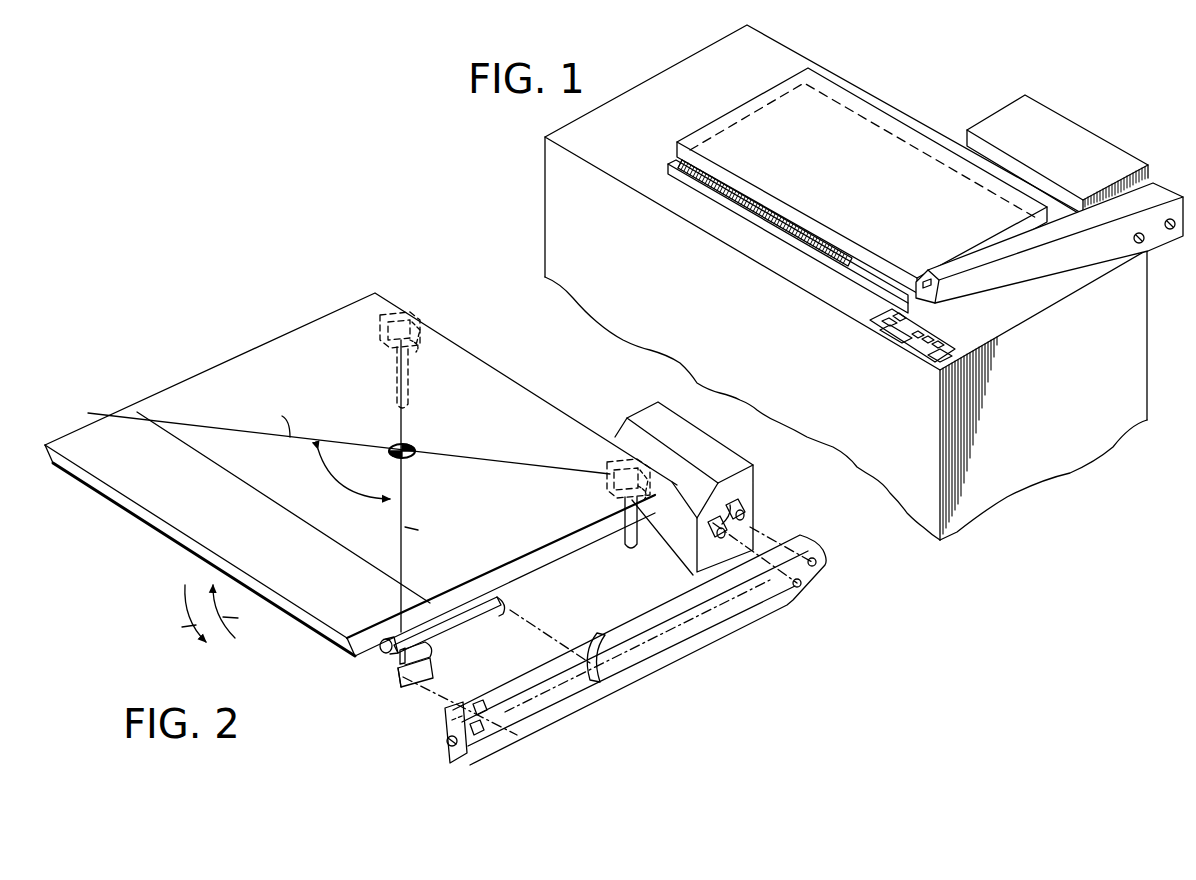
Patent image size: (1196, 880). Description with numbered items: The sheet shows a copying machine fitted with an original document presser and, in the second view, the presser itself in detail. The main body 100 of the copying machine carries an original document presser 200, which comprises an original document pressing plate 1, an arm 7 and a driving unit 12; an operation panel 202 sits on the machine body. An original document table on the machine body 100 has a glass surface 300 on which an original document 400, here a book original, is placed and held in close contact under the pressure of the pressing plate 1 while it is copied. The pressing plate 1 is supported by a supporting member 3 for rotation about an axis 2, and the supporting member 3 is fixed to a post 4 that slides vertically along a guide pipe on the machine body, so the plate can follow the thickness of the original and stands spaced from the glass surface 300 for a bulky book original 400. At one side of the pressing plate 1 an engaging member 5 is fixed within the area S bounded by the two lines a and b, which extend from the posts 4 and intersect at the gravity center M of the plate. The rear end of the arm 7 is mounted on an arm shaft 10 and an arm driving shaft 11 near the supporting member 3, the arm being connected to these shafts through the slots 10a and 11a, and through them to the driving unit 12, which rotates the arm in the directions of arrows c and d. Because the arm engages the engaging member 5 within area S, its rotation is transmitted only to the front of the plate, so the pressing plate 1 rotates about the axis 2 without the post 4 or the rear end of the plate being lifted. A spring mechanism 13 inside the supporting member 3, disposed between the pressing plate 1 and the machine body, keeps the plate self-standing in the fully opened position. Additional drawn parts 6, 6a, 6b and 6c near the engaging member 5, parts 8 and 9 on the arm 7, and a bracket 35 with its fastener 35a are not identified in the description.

In FIG. 1, the original document pressing plate 1 is at (812, 73).
In FIG. 2, the original document pressing plate 1 is at (490, 372).
In FIG. 2, the axis 2 is at (380, 330).
In FIG. 2, the supporting member 3 is at (421, 323).
In FIG. 2, the post 4 is at (410, 400).
In FIG. 2, the engaging member 5 is at (395, 638).
In FIG. 2, the guide piece 6 is at (413, 680).
In FIG. 2, the hook 6a is at (433, 660).
In FIG. 2, the guide rail 6b is at (503, 607).
In FIG. 2, the pin 6c is at (399, 668).
In FIG. 1, the arm 7 is at (1033, 252).
In FIG. 2, the arm 7 is at (735, 613).
In FIG. 2, the hub 8 is at (486, 722).
In FIG. 2, the clip 9 is at (597, 677).
In FIG. 2, the arm shaft 10 is at (710, 527).
In FIG. 2, the slot 10a is at (807, 588).
In FIG. 2, the arm driving shaft 11 is at (740, 509).
In FIG. 2, the slot 11a is at (818, 561).
In FIG. 1, the driving unit 12 is at (1093, 142).
In FIG. 2, the driving unit 12 is at (713, 452).
In FIG. 2, the spring mechanism 13 is at (420, 350).
In FIG. 2, the bracket 35 is at (470, 748).
In FIG. 2, the screw 35a is at (445, 741).
In FIG. 1, the main body of the copying machine 100 is at (1115, 448).
In FIG. 1, the original document presser 200 is at (943, 126).
In FIG. 1, the operation panel 202 is at (917, 355).
In FIG. 1, the glass surface 300 is at (880, 283).
In FIG. 1, the original document 400 is at (810, 247).